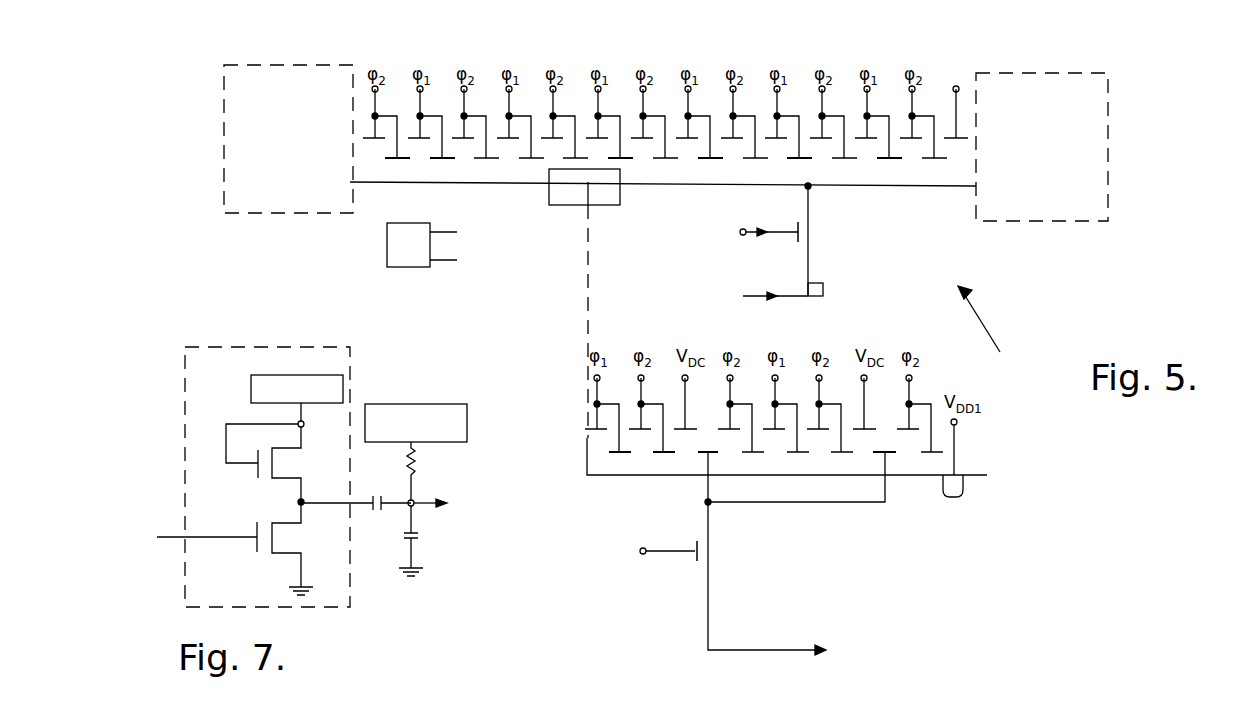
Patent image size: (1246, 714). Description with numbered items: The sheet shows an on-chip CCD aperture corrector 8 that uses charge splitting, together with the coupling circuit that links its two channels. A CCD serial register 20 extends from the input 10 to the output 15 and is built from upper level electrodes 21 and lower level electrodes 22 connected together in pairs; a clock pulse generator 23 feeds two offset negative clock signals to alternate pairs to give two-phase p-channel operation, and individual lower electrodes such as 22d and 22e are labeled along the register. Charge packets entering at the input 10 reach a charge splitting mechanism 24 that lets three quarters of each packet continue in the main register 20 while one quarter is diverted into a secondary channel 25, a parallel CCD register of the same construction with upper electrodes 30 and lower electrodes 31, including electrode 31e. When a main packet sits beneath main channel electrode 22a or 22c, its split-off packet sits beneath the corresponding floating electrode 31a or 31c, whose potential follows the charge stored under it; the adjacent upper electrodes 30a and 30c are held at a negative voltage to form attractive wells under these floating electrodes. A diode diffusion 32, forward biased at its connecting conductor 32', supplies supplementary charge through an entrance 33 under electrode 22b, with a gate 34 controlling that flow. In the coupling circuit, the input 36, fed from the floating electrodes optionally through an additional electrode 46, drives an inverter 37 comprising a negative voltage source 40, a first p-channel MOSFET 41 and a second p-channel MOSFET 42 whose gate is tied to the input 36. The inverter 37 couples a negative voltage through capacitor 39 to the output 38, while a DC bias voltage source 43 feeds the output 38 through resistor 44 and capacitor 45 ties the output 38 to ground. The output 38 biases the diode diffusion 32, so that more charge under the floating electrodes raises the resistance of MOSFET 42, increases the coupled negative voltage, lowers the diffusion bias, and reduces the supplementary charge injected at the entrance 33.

In FIG. 5, the aperture corrector 8 is at (983, 326).
In FIG. 5, the input 10 is at (353, 65).
In FIG. 5, the output 15 is at (1108, 73).
In FIG. 5, the CCD serial register 20 is at (497, 184).
In FIG. 5, the upper level electrodes 21 is at (428, 130).
In FIG. 5, the lower level electrodes 22 is at (446, 158).
In FIG. 5, the main channel electrode 22a is at (712, 164).
In FIG. 5, the main channel electrode 22b is at (800, 164).
In FIG. 5, the main channel electrode 22c is at (888, 164).
In FIG. 5, the main channel electrode 22d is at (397, 160).
In FIG. 5, the main channel electrode 22e is at (624, 160).
In FIG. 5, the clock pulse generator 23 is at (387, 263).
In FIG. 5, the charge splitting mechanism 24 is at (620, 205).
In FIG. 5, the secondary channel 25 is at (612, 477).
In FIG. 5, the upper electrodes 30 is at (636, 424).
In FIG. 5, the upper level electrode 30a is at (692, 426).
In FIG. 5, the upper level electrode 30c is at (870, 427).
In FIG. 5, the lower electrodes 31 is at (656, 455).
In FIG. 5, the floating electrode 31a is at (703, 457).
In FIG. 5, the floating electrode 31c is at (887, 456).
In FIG. 5, the secondary channel electrode 31e is at (605, 452).
In FIG. 5, the diode diffusion 32 is at (832, 277).
In FIG. 5, the connecting conductor 32' is at (766, 307).
In FIG. 5, the entrance 33 is at (810, 190).
In FIG. 5, the gate 34 is at (782, 236).
In FIG. 7, the input 36 is at (172, 541).
In FIG. 7, the inverter 37 is at (350, 607).
In FIG. 7, the output 38 is at (415, 500).
In FIG. 7, the capacitor 39 is at (371, 512).
In FIG. 7, the negative voltage source 40 is at (266, 374).
In FIG. 7, the first p-channel MOSFET 41 is at (268, 482).
In FIG. 7, the second p-channel MOSFET 42 is at (284, 547).
In FIG. 7, the DC bias voltage source 43 is at (406, 446).
In FIG. 7, the resistor 44 is at (415, 470).
In FIG. 7, the capacitor 45 is at (418, 540).
In FIG. 5, the additional electrode 46 is at (690, 556).